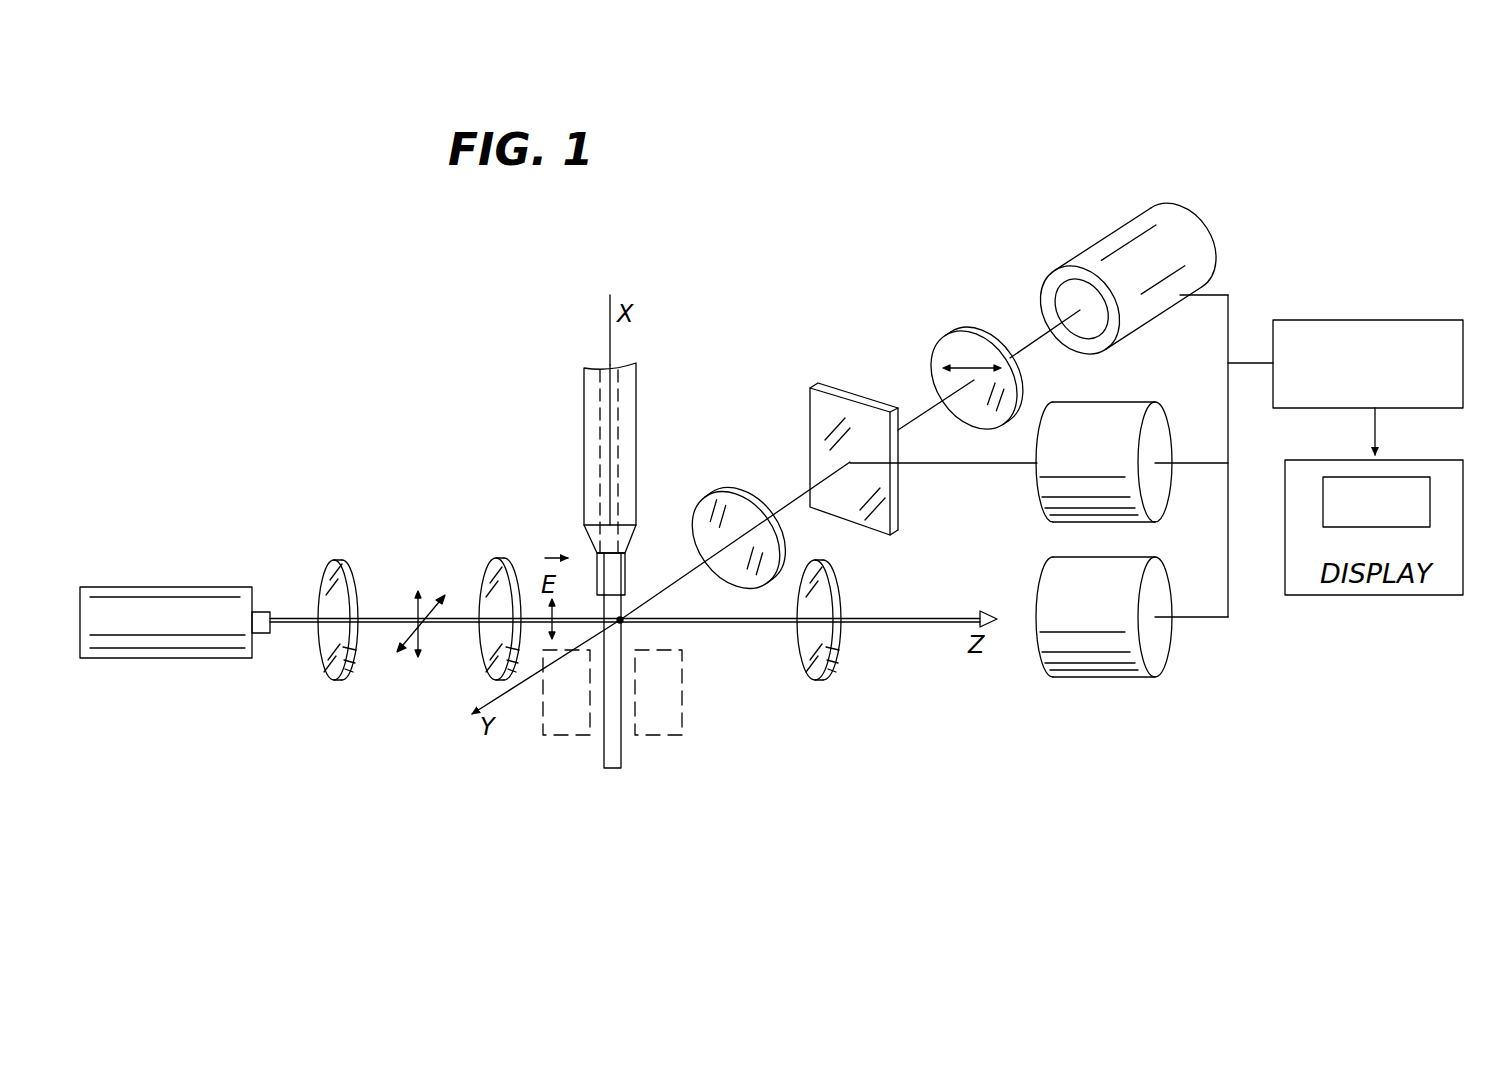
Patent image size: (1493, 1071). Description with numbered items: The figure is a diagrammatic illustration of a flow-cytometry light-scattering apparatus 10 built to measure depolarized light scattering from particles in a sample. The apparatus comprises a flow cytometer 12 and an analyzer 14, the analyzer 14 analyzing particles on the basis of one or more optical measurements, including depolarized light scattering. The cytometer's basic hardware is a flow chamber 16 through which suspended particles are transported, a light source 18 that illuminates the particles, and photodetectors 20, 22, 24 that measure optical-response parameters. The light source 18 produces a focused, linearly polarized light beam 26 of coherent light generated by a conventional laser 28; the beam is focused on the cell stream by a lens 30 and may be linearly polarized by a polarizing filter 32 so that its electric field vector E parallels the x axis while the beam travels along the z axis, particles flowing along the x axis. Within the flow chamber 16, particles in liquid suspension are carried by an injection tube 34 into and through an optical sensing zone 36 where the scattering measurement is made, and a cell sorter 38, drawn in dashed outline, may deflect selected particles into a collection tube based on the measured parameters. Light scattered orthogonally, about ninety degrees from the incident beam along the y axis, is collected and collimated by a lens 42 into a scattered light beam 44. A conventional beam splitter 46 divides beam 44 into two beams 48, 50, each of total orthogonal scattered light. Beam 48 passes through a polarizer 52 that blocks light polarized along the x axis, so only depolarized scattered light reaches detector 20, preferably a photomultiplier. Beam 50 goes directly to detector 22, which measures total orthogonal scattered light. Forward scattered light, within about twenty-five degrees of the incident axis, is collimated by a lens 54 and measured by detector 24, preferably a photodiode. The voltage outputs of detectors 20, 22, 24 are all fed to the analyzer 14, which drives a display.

The cytometer apparatus 10 is at (766, 390).
The flow cytometer 12 is at (598, 479).
The analyzer 14 is at (1341, 320).
The flow chamber 16 is at (645, 428).
The light source 18 is at (175, 623).
The detector 20 is at (1190, 222).
The detector 22 is at (1113, 412).
The detector 24 is at (1093, 672).
The light beam 26 is at (300, 630).
The laser 28 is at (141, 658).
The lens 30 is at (342, 565).
The polarizing filter 32 is at (492, 565).
The injection tube 34 is at (616, 758).
The optical sensing zone 36 is at (625, 625).
The cell sorter 38 is at (688, 718).
The lens 42 is at (702, 503).
The scattered light beam 44 is at (784, 500).
The beam splitter 46 is at (830, 395).
The beam 48 is at (926, 405).
The beam 50 is at (961, 465).
The polarizer 52 is at (958, 345).
The lens 54 is at (835, 672).